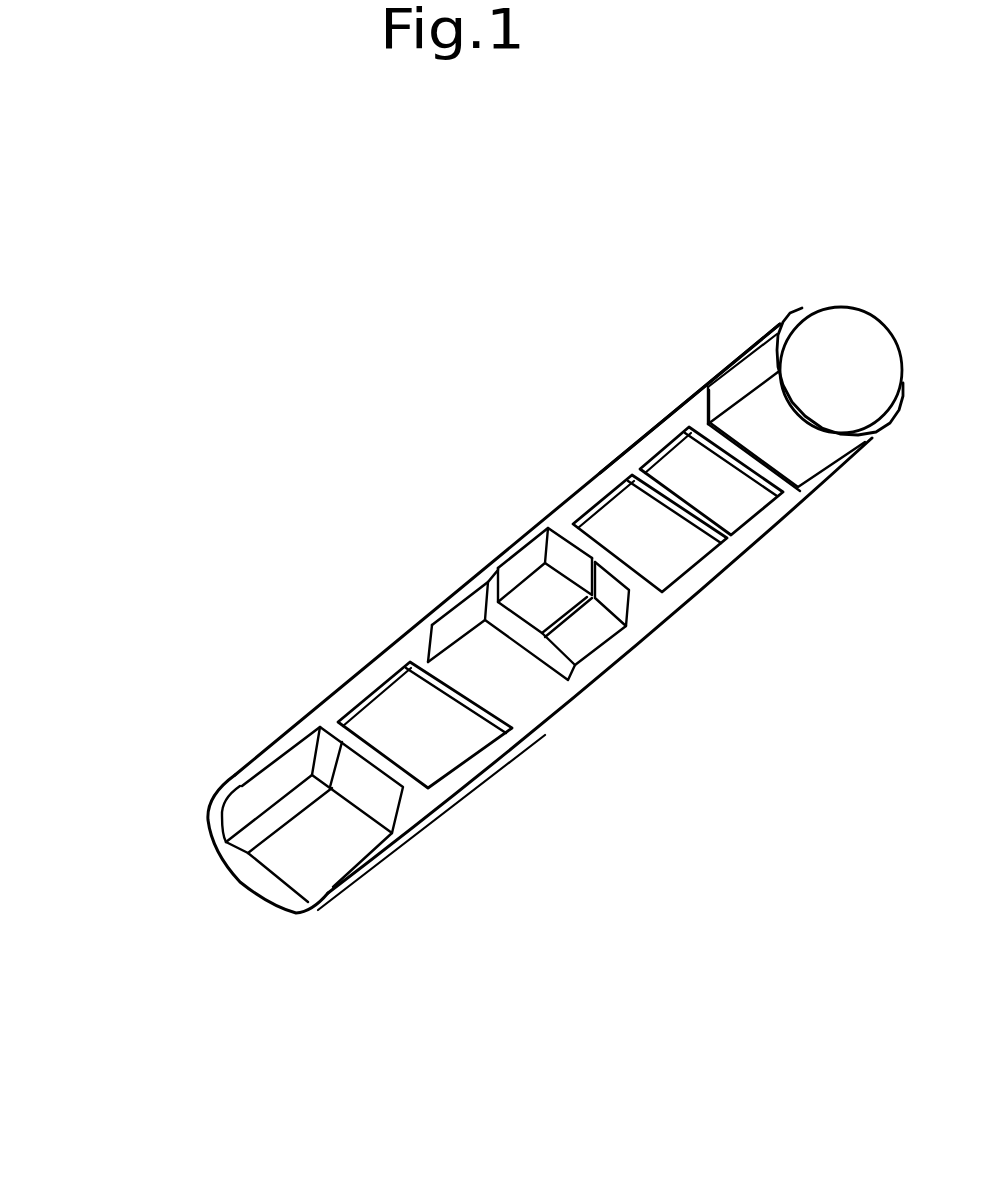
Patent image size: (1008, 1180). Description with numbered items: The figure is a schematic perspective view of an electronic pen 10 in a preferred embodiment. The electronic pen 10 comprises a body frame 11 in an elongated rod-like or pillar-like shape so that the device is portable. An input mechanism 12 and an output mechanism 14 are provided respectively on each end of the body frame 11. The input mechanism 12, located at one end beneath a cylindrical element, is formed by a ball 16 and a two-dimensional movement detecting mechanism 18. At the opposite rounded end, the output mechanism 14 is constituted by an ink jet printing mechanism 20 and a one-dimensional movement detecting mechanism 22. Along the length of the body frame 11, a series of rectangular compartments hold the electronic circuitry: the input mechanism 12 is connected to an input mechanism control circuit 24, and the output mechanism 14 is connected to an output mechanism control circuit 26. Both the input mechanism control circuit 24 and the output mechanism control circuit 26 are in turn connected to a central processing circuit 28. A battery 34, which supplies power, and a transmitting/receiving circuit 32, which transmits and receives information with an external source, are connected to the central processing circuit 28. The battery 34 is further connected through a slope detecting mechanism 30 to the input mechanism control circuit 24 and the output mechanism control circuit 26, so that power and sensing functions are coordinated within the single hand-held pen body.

The electronic pen 10 is at (403, 320).
The body frame 11 is at (614, 462).
The input mechanism 12 is at (745, 325).
The output mechanism 14 is at (220, 915).
The ball 16 is at (835, 350).
The two-dimensional movement detecting mechanism 18 is at (737, 385).
The ink jet printing mechanism 20 is at (288, 873).
The one-dimensional movement detecting mechanism 22 is at (242, 820).
The input mechanism control circuit 24 is at (753, 507).
The output mechanism control circuit 26 is at (448, 760).
The central processing circuit 28 is at (673, 568).
The slope detecting mechanism 30 is at (528, 565).
The transmitting/receiving circuit 32 is at (598, 633).
The battery 34 is at (530, 695).